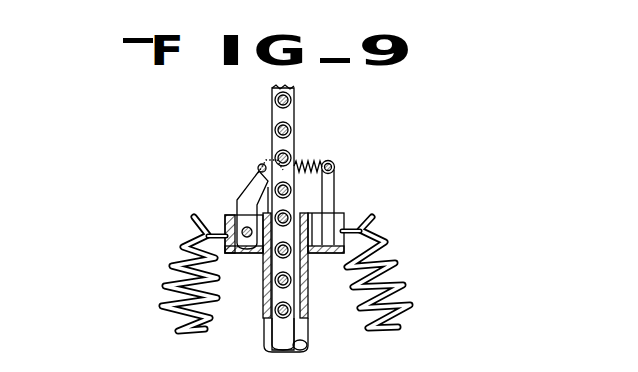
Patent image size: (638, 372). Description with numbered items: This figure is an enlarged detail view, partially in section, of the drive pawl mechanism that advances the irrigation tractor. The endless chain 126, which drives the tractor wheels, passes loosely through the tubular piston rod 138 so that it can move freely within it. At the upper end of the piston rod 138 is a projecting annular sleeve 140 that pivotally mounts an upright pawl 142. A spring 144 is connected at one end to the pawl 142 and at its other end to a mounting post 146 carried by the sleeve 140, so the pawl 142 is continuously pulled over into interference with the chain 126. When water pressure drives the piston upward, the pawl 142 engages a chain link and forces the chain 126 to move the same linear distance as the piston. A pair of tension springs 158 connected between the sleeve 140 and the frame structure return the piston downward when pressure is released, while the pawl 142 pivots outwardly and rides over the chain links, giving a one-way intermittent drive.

The endless chain 126 is at (271, 108).
The tubular piston rod 138 is at (265, 328).
The projecting annular sleeve 140 is at (345, 211).
The upright pawl 142 is at (258, 177).
The spring 144 is at (308, 160).
The mounting post 146 is at (337, 172).
The tension springs 158 is at (185, 262).